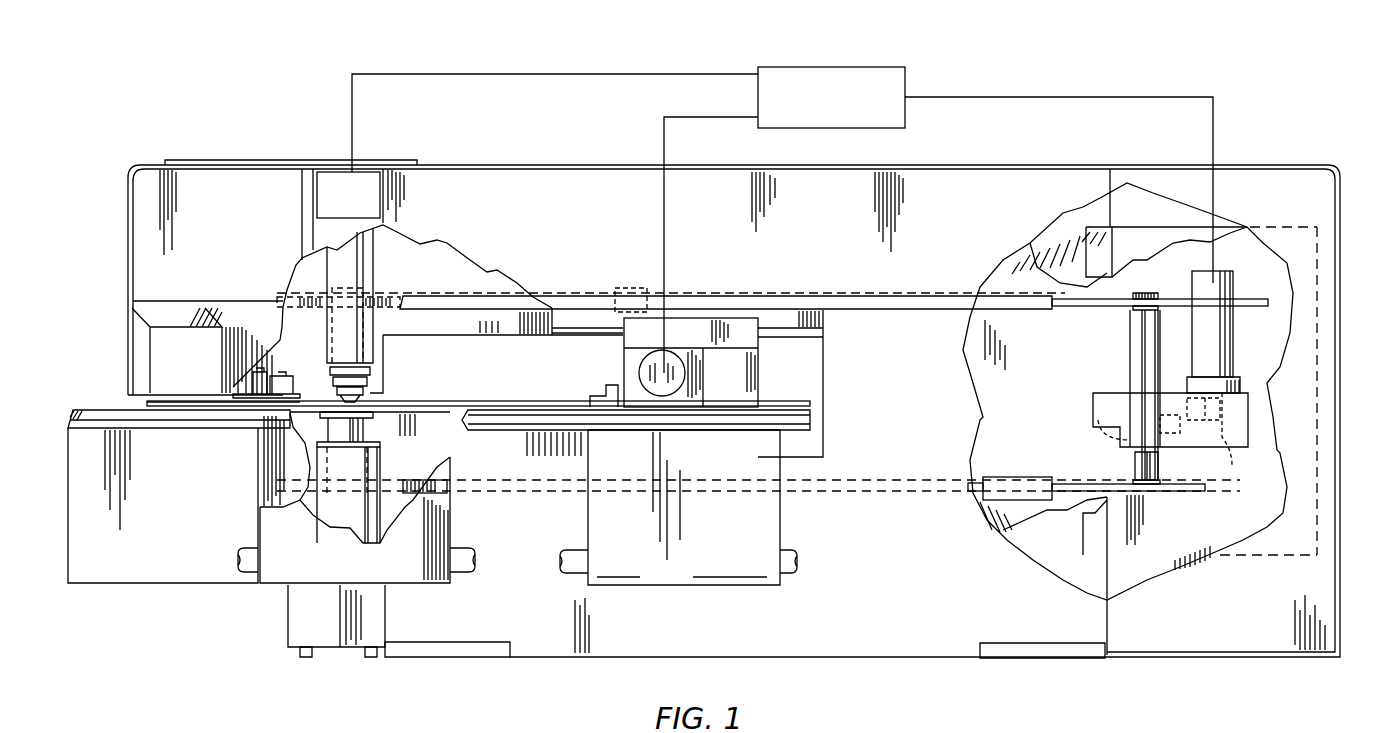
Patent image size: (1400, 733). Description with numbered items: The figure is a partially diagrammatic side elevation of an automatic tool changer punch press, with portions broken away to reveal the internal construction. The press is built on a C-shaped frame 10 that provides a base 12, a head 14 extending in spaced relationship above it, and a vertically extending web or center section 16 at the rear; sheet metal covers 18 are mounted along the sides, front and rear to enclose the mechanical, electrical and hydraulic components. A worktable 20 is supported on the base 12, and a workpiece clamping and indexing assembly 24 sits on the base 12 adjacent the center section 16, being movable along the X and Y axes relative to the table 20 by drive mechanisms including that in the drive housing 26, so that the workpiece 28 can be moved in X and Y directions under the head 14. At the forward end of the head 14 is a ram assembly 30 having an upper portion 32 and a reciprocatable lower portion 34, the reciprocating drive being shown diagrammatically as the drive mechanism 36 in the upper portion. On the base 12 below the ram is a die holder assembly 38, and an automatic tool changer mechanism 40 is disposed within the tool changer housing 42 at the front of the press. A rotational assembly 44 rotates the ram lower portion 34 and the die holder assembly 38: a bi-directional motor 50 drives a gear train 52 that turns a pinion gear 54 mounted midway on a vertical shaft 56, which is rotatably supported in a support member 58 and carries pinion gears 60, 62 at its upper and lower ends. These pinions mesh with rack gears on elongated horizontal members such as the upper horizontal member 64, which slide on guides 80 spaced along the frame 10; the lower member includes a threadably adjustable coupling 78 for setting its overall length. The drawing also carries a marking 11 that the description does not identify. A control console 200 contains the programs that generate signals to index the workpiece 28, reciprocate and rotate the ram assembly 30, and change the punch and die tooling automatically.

The C-shaped frame 10 is at (537, 665).
The lower spindle axis 11 is at (408, 497).
The base 12 is at (877, 560).
The head 14 is at (422, 289).
The center section 16 is at (890, 385).
The sheet metal covers 18 is at (512, 233).
The worktable 20 is at (100, 447).
The workpiece clamping and indexing assembly 24 is at (598, 387).
The drive housing 26 is at (687, 383).
The workpiece 28 is at (147, 403).
The ram assembly 30 is at (331, 271).
The upper portion 32 is at (320, 297).
The lower portion 34 is at (367, 364).
The drive mechanism 36 is at (357, 183).
The die holder assembly 38 is at (345, 494).
The automatic tool changer mechanism 40 is at (250, 383).
The tool changer housing 42 is at (173, 345).
The rotational assembly 44 is at (1228, 428).
The bi-directional motor 50 is at (1210, 360).
The gear train 52 is at (1273, 428).
The pinion gear 54 is at (1093, 420).
The vertical shaft 56 is at (1130, 475).
The support member 58 is at (1128, 363).
The pinion gear 60 is at (1140, 293).
The pinion gear 62 is at (1153, 493).
The elongated horizontal member 64 is at (487, 287).
The threadably adjustable coupling 78 is at (1023, 483).
The guides 80 is at (628, 288).
The control console 200 is at (857, 67).